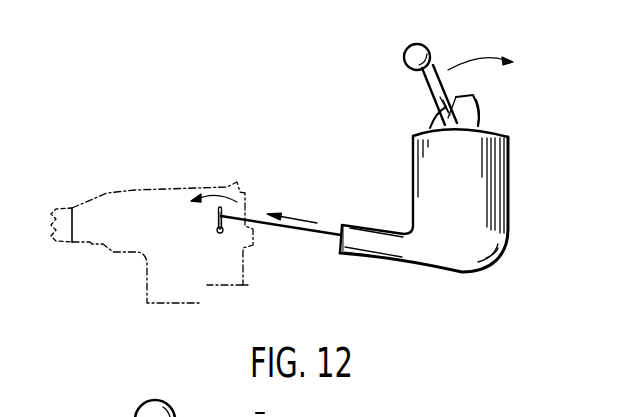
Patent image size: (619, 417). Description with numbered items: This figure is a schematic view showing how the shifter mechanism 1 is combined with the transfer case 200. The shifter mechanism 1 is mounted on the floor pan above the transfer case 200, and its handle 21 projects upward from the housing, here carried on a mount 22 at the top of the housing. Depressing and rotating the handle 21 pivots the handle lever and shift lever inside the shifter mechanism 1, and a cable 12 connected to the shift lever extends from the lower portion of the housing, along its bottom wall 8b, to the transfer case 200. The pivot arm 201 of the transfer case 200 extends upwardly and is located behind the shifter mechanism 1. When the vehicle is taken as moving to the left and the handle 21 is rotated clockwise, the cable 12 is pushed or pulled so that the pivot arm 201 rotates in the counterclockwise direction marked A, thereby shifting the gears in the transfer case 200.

The shifter mechanism 1 is at (522, 168).
The handle 21 is at (433, 85).
The lever mount / support 22 is at (453, 98).
The bottom wall of arm 8b is at (372, 247).
The cable 12 is at (297, 229).
The transfer case 200 is at (201, 287).
The pivot arm 201 is at (217, 225).